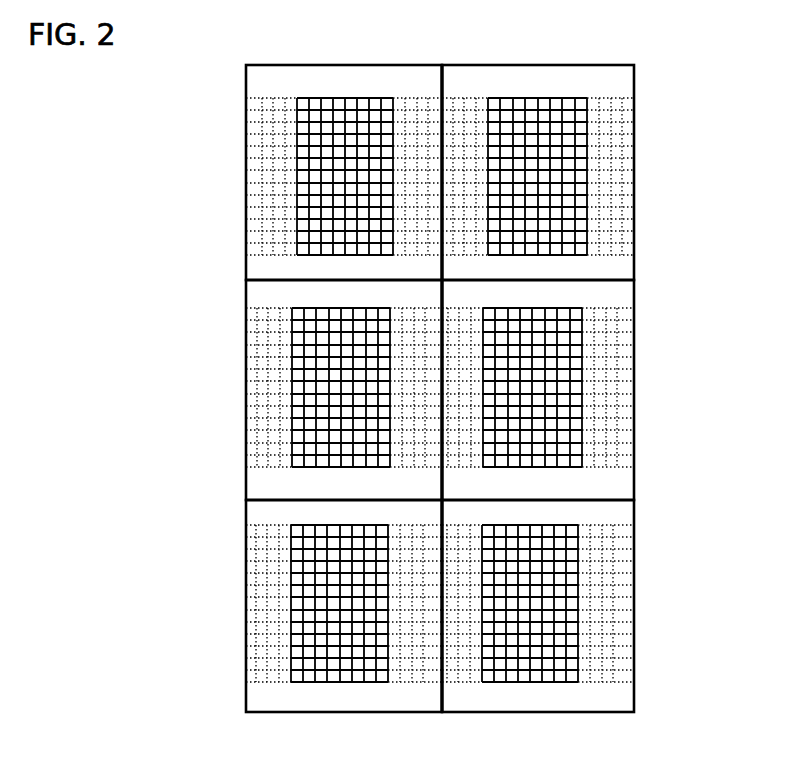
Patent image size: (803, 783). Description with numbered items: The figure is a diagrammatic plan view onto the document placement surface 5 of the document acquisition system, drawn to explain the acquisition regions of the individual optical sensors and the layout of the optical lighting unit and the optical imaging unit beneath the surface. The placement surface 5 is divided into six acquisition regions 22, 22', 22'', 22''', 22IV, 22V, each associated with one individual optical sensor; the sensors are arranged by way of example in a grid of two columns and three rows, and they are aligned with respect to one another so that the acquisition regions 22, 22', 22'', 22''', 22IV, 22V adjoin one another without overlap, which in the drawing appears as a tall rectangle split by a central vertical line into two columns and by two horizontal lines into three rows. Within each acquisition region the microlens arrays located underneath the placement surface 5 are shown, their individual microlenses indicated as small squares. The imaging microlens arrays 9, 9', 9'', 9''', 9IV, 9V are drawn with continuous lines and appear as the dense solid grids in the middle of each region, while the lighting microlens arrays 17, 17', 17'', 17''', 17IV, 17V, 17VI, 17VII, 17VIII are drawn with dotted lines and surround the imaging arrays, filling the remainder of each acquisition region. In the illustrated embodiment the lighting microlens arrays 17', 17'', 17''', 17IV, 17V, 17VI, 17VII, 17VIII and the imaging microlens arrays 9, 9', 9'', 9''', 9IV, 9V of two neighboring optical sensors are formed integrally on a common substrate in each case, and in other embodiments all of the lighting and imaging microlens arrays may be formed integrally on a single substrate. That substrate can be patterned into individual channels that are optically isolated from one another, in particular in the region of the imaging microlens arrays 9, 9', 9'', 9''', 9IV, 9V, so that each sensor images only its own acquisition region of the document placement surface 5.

The document placement surface 5 is at (455, 68).
The imaging microlens array 9 is at (339, 648).
The imaging microlens array 9' is at (531, 641).
The imaging microlens array 9'' is at (290, 387).
The imaging microlens array 9''' is at (590, 387).
The imaging microlens array 9IV is at (320, 190).
The imaging microlens array 9V is at (565, 218).
The lighting microlens array 17 is at (264, 647).
The lighting microlens array 17' is at (435, 647).
The lighting microlens array 17'' is at (629, 617).
The lighting microlens array 17''' is at (241, 387).
The lighting microlens array 17IV is at (468, 457).
The lighting microlens array 17V is at (620, 385).
The lighting microlens array 17VI is at (258, 160).
The lighting microlens array 17VII is at (424, 104).
The lighting microlens array 17VIII is at (622, 130).
The acquisition region 22 is at (314, 604).
The acquisition region 22' is at (575, 604).
The acquisition region 22'' is at (319, 382).
The acquisition region 22''' is at (571, 378).
The acquisition region 22IV is at (262, 70).
The acquisition region 22V is at (622, 84).